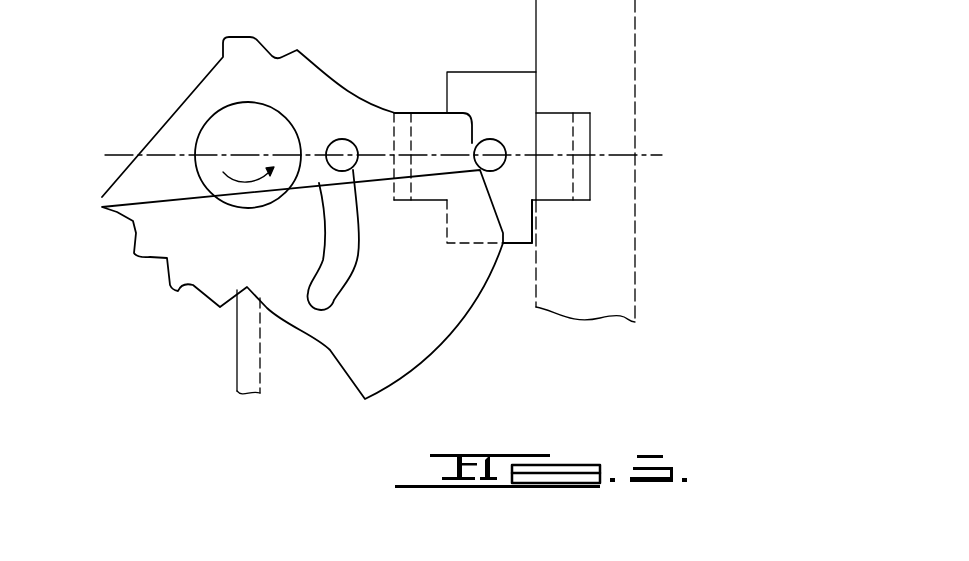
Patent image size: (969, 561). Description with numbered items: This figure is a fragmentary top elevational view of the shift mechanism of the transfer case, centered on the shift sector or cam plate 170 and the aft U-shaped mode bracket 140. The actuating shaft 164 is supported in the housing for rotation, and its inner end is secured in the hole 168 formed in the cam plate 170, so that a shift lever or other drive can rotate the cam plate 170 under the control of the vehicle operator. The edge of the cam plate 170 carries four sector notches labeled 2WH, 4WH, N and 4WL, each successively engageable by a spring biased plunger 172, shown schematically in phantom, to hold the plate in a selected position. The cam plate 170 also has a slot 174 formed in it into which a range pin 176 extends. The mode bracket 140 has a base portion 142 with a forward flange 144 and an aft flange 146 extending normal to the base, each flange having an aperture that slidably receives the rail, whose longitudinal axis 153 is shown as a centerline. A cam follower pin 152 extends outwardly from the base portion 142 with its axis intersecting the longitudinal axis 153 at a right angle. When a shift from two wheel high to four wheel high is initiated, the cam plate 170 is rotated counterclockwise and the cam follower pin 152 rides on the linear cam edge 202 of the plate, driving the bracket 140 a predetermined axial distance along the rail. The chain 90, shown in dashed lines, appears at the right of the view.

The chain 90 is at (635, 93).
The mode bracket 140 is at (490, 123).
The base portion 142 is at (457, 80).
The forward flange 144 is at (402, 125).
The aft flange 146 is at (588, 132).
The cam follower pin 152 is at (483, 143).
The longitudinal axis 153 is at (650, 157).
The actuating shaft 164 is at (218, 127).
The hole 168 is at (273, 118).
The cam plate 170 is at (197, 97).
The spring biased plunger 172 is at (237, 385).
The slot 174 is at (350, 276).
The range pin 176 is at (340, 140).
The linear cam edge 202 is at (503, 220).
The four wheel drive low range notch 4WL is at (123, 217).
The neutral notch N is at (141, 260).
The four wheel drive high range notch 4WH is at (192, 288).
The two wheel drive high range notch 2WH is at (283, 319).